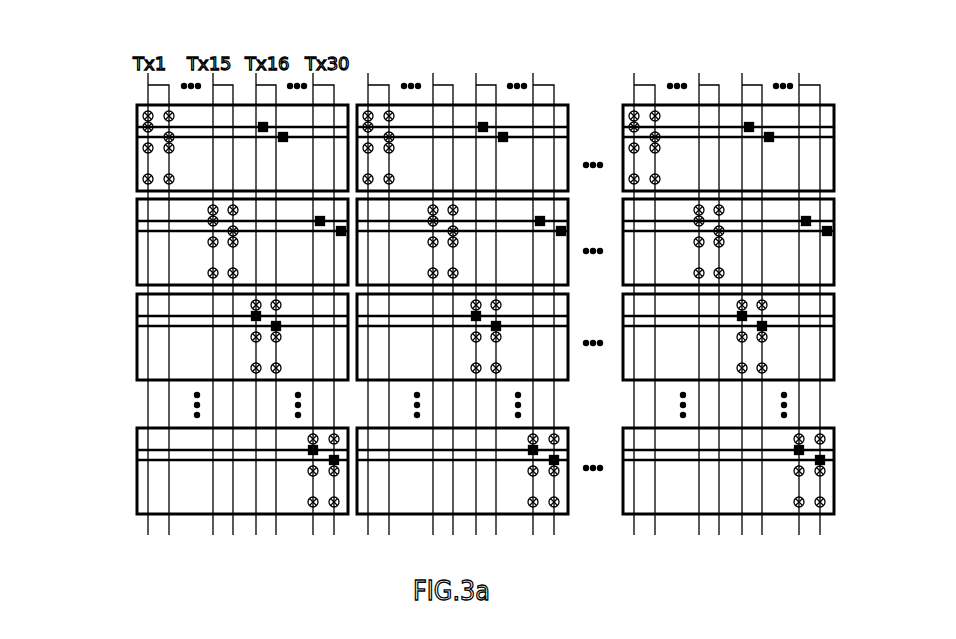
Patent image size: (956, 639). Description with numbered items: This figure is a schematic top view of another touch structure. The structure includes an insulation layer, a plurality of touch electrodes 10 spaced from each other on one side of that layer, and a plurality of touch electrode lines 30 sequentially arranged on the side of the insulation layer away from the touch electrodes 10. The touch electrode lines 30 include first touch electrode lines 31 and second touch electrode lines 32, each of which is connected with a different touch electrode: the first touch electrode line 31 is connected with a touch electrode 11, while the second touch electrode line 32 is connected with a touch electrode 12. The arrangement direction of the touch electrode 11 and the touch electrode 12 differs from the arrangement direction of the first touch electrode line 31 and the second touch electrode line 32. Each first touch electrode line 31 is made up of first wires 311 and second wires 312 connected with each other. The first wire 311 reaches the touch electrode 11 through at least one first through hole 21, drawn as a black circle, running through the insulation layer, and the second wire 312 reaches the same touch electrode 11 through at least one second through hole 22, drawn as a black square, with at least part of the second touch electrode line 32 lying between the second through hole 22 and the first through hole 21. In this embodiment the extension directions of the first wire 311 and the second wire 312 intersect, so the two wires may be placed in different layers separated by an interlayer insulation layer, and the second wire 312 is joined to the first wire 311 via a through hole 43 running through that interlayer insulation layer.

The touch electrode 10 is at (570, 110).
The touch electrode 11 is at (352, 101).
The touch electrode 12 is at (137, 280).
The touch electrode line 30 is at (476, 73).
The first touch electrode line 31 is at (148, 280).
The second touch electrode line 32 is at (202, 280).
The first wire 311 is at (148, 97).
The second wire 312 is at (208, 137).
The through hole 43 is at (146, 131).
The first through hole 21 is at (147, 181).
The second through hole 22 is at (258, 131).